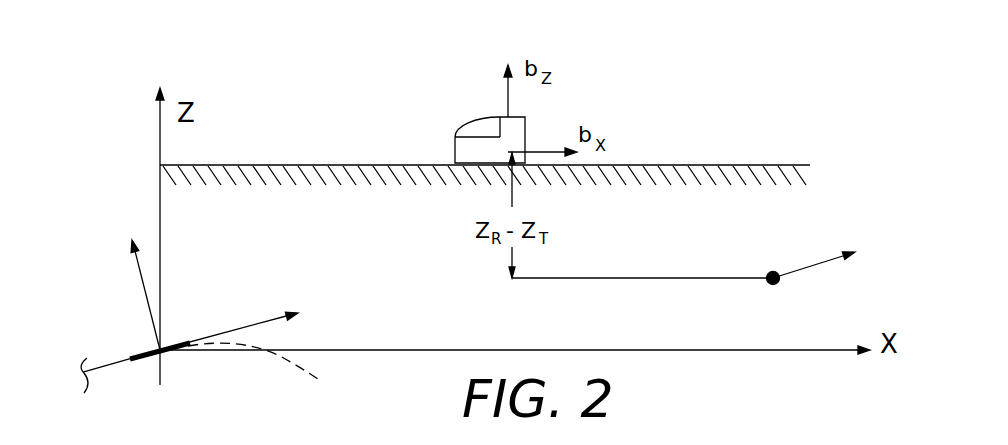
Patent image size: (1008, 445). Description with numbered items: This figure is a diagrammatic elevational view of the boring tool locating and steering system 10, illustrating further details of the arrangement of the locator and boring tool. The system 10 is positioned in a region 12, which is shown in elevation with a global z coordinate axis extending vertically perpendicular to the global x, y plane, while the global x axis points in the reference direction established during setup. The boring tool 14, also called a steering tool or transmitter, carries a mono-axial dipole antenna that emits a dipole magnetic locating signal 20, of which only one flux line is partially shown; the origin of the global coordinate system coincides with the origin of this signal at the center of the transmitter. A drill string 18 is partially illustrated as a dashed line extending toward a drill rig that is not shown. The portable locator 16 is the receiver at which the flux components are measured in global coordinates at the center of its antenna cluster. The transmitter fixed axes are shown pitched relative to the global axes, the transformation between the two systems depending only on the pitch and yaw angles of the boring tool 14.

The boring tool locating and steering system 10 is at (627, 104).
The region 12 is at (760, 212).
The boring tool 14 is at (185, 342).
The portable locator 16 is at (455, 152).
The drill string 18 is at (107, 370).
The dipole magnetic locating signal 20 is at (298, 364).